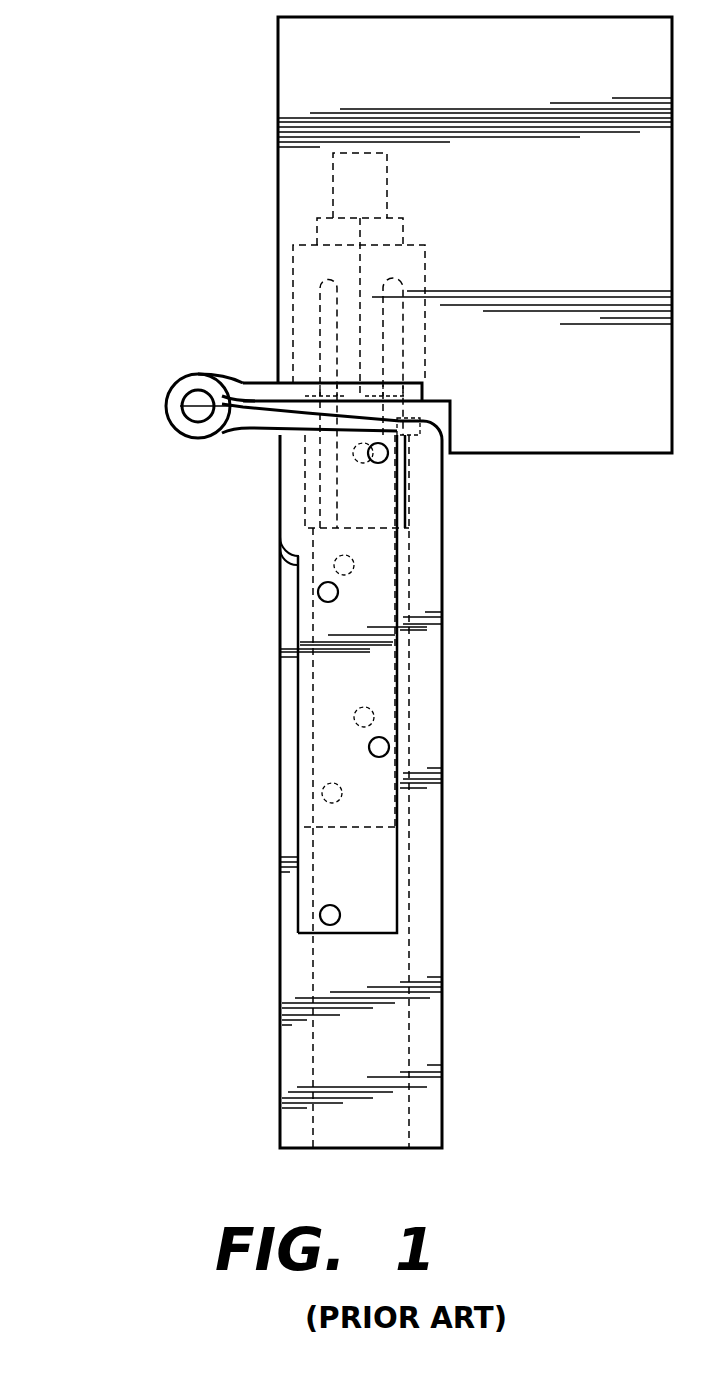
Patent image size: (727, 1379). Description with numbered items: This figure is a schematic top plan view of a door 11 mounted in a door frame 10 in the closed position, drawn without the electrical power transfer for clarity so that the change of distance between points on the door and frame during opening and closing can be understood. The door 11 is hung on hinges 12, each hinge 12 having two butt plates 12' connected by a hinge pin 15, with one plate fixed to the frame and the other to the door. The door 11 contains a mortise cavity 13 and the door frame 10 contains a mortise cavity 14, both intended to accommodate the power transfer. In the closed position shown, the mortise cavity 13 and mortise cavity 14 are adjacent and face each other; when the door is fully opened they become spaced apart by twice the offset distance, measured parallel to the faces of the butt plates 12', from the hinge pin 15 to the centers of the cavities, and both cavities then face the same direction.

The door frame 10 is at (612, 209).
The door 11 is at (373, 1056).
The hinge 12 is at (221, 421).
The butt plate 12' is at (275, 421).
The mortise cavity 13 is at (412, 505).
The mortise cavity 14 is at (425, 260).
The hinge pin 15 is at (190, 400).